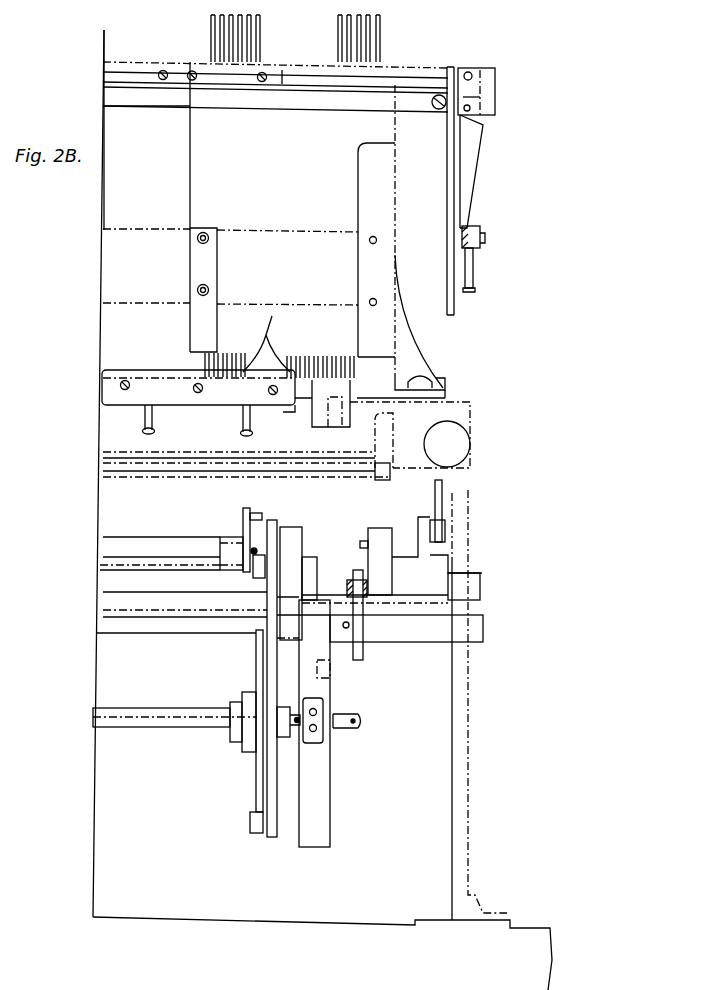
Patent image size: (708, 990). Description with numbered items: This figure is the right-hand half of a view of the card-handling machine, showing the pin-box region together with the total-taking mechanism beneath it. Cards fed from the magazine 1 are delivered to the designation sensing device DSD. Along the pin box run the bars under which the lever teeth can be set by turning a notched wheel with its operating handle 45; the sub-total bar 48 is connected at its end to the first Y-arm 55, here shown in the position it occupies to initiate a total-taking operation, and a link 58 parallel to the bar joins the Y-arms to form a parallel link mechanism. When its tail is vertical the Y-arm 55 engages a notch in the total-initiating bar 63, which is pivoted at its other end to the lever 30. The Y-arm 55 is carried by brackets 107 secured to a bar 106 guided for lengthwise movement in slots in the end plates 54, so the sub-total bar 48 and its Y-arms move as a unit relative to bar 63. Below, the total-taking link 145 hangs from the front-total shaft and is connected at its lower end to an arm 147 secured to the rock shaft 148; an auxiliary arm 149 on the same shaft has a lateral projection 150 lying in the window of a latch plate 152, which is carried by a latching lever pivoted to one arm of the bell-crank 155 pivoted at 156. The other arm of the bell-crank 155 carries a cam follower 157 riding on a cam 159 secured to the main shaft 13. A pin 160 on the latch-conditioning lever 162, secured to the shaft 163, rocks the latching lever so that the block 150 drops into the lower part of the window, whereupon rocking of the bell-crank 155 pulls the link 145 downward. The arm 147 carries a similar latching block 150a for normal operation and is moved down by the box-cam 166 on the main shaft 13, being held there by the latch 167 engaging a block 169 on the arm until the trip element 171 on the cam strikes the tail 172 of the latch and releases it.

The magazine 1 is at (418, 338).
The main shaft 13 is at (115, 717).
The lever 30 is at (475, 262).
The operating handle 45 is at (334, 56).
The sub-total bar 48 is at (128, 97).
The end plates 54 is at (473, 283).
The first Y-arm 55 is at (483, 128).
The link 58 is at (157, 70).
The total-initiating bar 63 is at (480, 232).
The bar 106 is at (110, 77).
The brackets 107 is at (487, 82).
The total-taking link 145 is at (442, 510).
The arm 147 is at (443, 537).
The rock shaft 148 is at (490, 580).
The auxiliary arm 149 is at (308, 537).
The lateral projection 150 is at (302, 540).
The latching block 150a is at (352, 547).
The latch plate 152 is at (282, 538).
The bell-crank 155 is at (272, 830).
The pivot 156 is at (290, 735).
The cam follower 157 is at (250, 828).
The cam 159 is at (257, 762).
The pin 160 is at (252, 520).
The latch-conditioning lever part 162 is at (243, 523).
The shaft 163 is at (130, 538).
The box-cam 166 is at (330, 778).
The latch 167 is at (363, 657).
The block 169 is at (393, 555).
The trip element 171 is at (317, 737).
The tail 172 is at (337, 670).
The designation sensing device DSD is at (380, 373).